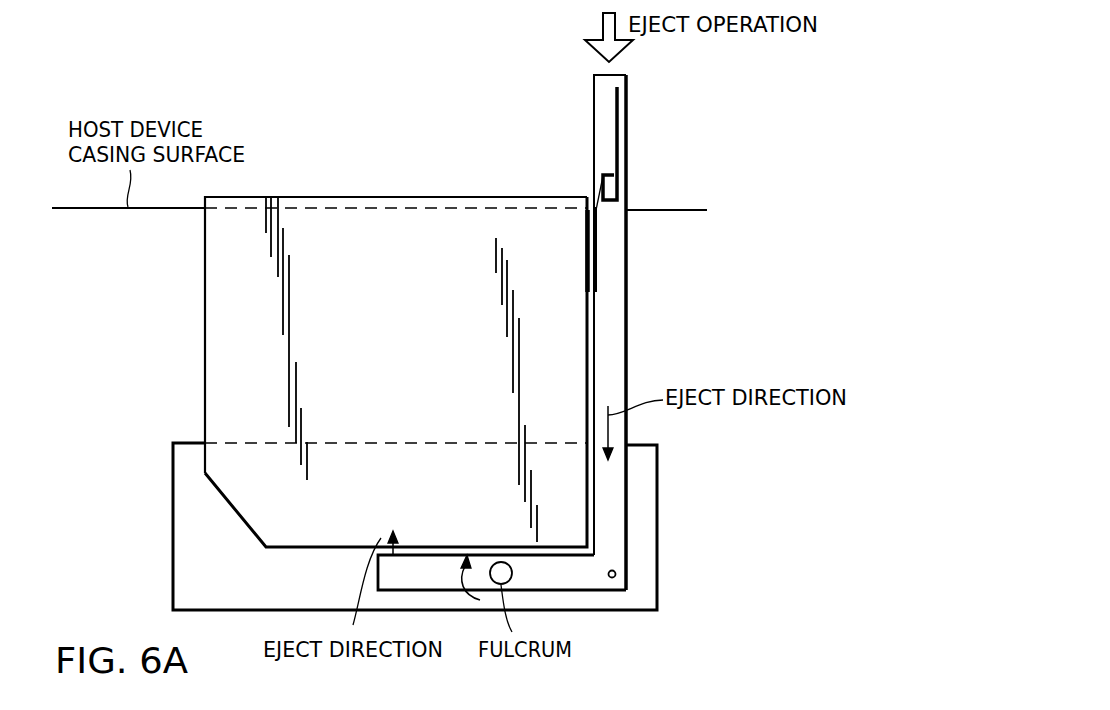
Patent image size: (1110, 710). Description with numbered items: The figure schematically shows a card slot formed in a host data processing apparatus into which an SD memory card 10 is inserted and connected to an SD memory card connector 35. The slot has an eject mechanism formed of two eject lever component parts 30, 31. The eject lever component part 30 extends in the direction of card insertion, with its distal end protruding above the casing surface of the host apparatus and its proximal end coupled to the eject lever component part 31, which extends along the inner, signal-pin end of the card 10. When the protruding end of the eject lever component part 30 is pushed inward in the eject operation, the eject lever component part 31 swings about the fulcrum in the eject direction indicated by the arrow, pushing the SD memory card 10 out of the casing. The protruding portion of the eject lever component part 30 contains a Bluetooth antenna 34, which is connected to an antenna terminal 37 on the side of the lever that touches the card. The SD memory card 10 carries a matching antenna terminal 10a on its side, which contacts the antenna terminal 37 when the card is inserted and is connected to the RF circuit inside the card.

The SD memory card 10 is at (305, 197).
The antenna terminal 10a is at (587, 238).
The eject lever component part 30 is at (631, 302).
The eject lever component part 31 is at (587, 590).
The antenna 34 is at (617, 142).
The SD memory card connector 35 is at (659, 516).
The antenna terminal 37 is at (597, 261).